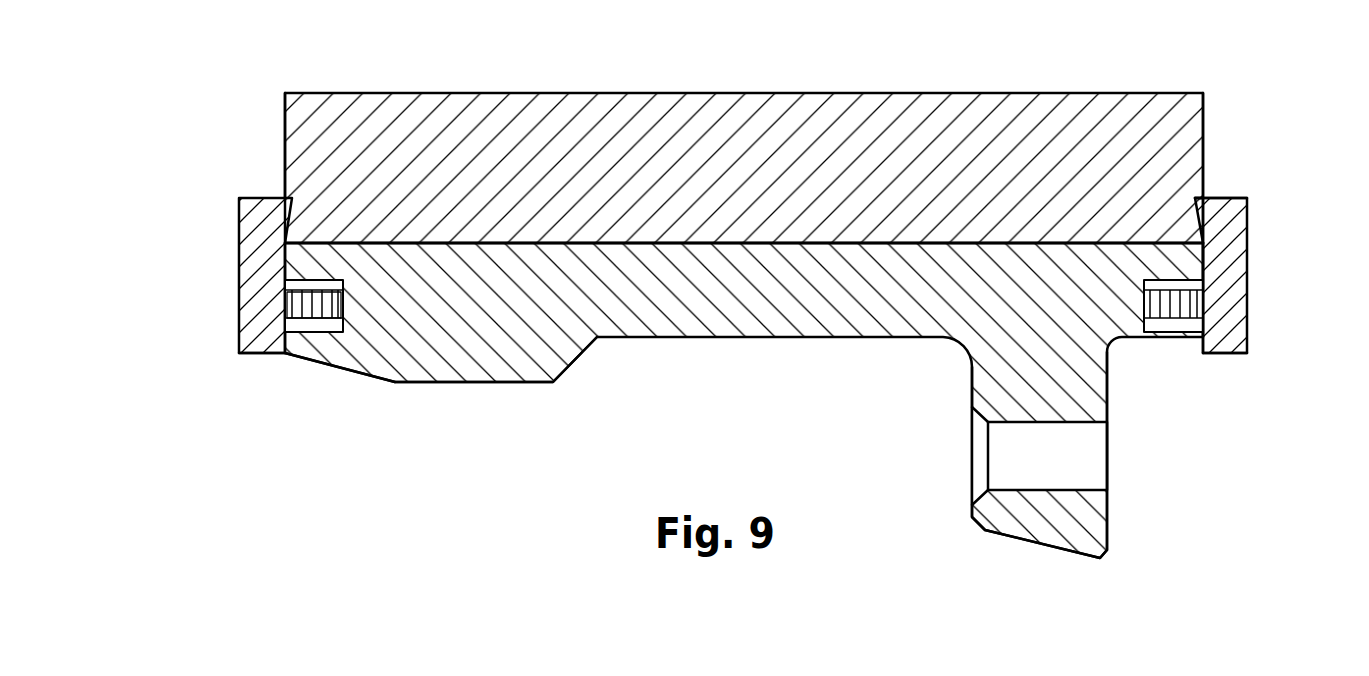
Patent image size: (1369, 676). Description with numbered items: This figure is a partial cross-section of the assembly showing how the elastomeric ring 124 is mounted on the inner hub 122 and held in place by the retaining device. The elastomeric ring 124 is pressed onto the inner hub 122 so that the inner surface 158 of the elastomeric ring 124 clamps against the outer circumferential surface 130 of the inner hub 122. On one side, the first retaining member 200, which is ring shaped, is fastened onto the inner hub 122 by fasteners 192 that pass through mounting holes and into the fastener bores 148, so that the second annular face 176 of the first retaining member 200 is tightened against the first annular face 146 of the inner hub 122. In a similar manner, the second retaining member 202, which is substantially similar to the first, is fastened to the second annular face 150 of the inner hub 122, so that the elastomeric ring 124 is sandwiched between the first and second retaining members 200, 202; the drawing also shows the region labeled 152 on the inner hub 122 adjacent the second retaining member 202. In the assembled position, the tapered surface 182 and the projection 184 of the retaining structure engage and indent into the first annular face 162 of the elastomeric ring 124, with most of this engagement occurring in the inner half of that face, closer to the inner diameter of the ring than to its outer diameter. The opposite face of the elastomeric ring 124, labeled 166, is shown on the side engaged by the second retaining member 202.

The inner hub 122 is at (712, 310).
The elastomeric ring 124 is at (737, 122).
The outer circumferential surface 130 is at (438, 243).
The first annular face 146 is at (1203, 267).
The fastener bores 148 is at (1163, 328).
The second annular face 150 is at (282, 341).
The groove 152 is at (310, 318).
The inner surface 158 is at (493, 244).
The first annular face 162 is at (1203, 113).
The left end face 166 is at (285, 122).
The second annular face 176 is at (298, 354).
The tapered surface 182 is at (1199, 228).
The projection 184 is at (1201, 197).
The fasteners 192 is at (322, 308).
The first retaining member 200 is at (1240, 253).
The second retaining member 202 is at (262, 262).